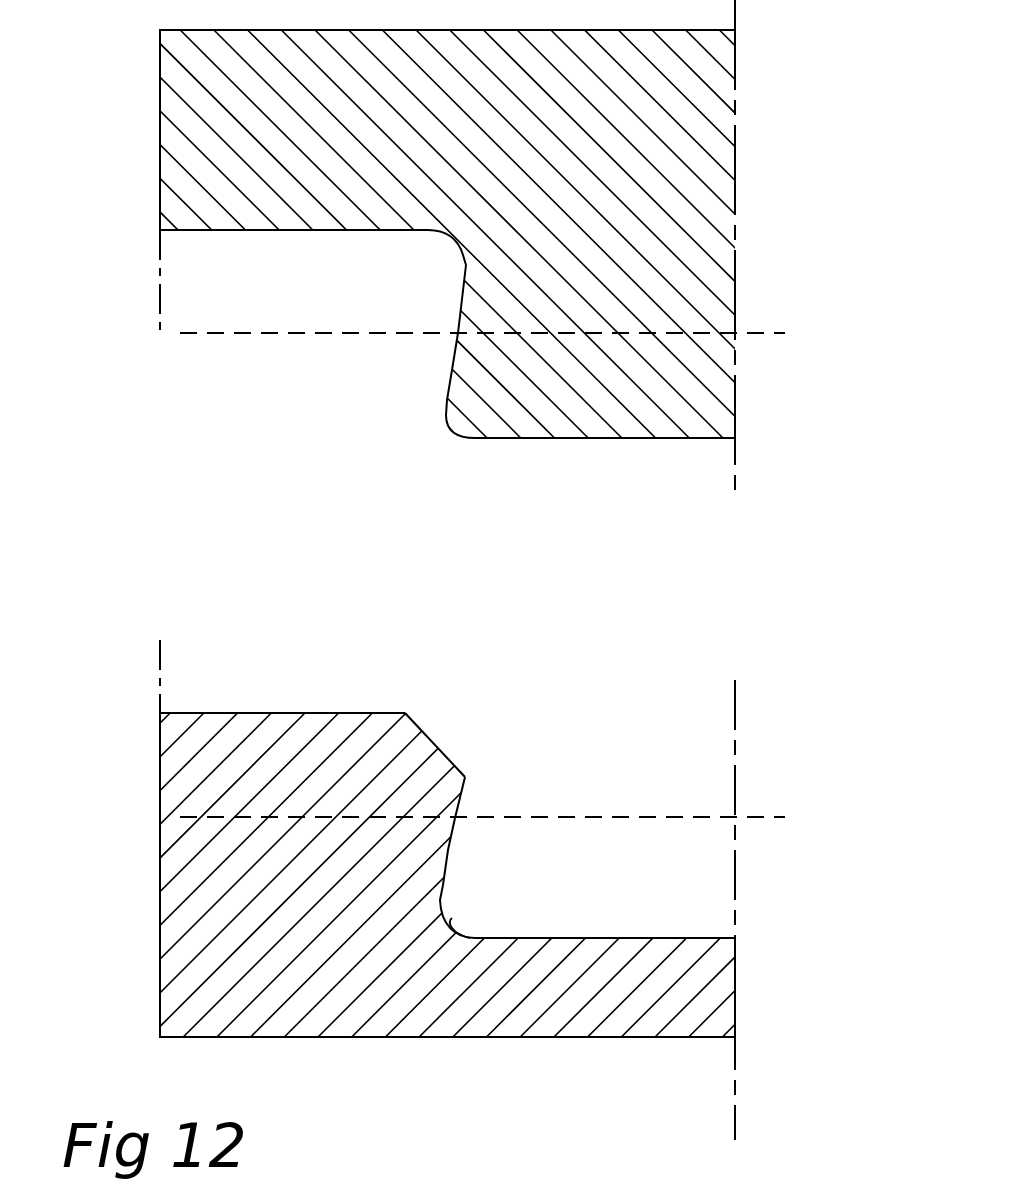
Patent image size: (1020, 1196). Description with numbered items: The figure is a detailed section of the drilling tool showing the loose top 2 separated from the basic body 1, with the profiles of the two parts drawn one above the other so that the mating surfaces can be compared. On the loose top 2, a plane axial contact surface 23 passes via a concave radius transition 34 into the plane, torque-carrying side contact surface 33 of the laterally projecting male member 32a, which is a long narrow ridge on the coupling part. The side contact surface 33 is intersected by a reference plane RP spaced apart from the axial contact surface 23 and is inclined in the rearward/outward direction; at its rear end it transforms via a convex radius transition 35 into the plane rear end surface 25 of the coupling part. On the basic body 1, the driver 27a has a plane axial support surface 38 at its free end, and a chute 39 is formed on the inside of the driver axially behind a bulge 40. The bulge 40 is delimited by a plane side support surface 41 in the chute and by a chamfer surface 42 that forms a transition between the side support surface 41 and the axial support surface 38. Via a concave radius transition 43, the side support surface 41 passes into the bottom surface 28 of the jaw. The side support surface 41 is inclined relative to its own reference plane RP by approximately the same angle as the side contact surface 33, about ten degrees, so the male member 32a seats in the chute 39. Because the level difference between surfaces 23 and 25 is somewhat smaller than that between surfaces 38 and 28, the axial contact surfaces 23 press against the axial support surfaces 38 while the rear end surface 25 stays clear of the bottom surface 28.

The basic body 1 is at (130, 750).
The loose top 2 is at (760, 84).
The axial contact surface 23 is at (310, 233).
The rear end surface 25 is at (610, 440).
The driver 27a is at (227, 752).
The bottom surface 28 is at (675, 937).
The male member 32a is at (460, 406).
The side contact surface 33 is at (458, 320).
The concave radius transition 34 is at (463, 256).
The convex radius transition 35 is at (448, 432).
The axial support surface 38 is at (322, 712).
The chute 39 is at (472, 898).
The bulge 40 is at (433, 777).
The side support surface 41 is at (450, 852).
The chamfer surface 42 is at (432, 746).
The concave radius transition 43 is at (452, 918).